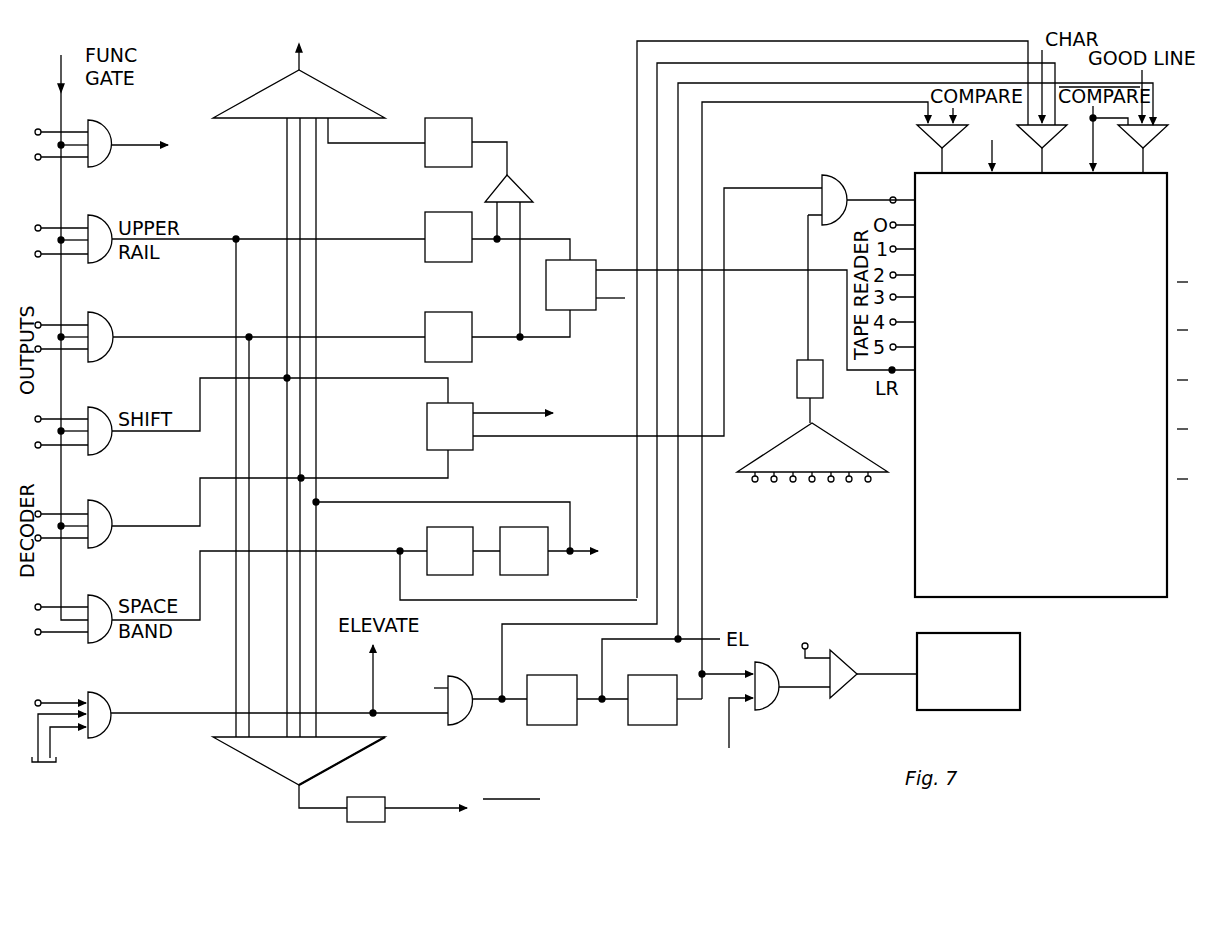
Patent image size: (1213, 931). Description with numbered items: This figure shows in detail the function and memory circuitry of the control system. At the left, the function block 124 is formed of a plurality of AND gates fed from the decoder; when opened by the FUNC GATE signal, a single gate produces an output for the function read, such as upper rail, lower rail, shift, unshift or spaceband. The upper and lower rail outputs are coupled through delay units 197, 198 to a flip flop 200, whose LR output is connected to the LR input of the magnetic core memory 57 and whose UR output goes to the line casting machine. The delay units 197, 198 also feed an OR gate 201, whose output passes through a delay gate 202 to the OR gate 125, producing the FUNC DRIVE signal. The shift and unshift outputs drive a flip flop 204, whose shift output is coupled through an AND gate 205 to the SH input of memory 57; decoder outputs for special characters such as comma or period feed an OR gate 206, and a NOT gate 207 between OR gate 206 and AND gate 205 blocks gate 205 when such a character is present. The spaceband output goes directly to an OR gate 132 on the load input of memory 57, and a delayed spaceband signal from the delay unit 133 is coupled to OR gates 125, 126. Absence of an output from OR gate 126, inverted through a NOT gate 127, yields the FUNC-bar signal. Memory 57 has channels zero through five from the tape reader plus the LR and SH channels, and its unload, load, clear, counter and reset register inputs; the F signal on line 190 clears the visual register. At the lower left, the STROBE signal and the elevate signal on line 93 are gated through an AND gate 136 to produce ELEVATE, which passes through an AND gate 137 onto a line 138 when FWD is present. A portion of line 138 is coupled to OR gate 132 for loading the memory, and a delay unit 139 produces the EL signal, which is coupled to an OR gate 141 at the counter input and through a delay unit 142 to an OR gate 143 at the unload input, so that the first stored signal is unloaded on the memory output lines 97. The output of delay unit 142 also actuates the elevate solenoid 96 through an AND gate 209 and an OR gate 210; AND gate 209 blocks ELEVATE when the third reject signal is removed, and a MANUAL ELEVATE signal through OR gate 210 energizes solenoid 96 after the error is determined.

The magnetic core memory 57 is at (1045, 346).
The elevate signal line 93 is at (43, 772).
The elevate solenoid 96 is at (1020, 688).
The memory output lines 97 is at (1169, 600).
The function block 124 is at (175, 389).
The OR gate 125 is at (262, 90).
The OR gate 126 is at (255, 760).
The NOT gate 127 is at (365, 797).
The OR gate 132 is at (1067, 135).
The delay unit 133 is at (510, 512).
The AND gate 136 is at (108, 737).
The AND gate 137 is at (455, 727).
The output line 138 is at (502, 702).
The delay unit 139 is at (555, 725).
The OR gate 141 is at (1168, 135).
The delay unit 142 is at (647, 725).
The OR gate 143 is at (917, 135).
The line 190 is at (992, 155).
The delay unit 197 is at (425, 228).
The delay unit 198 is at (425, 325).
The flip flop 200 is at (575, 258).
The OR gate 201 is at (533, 190).
The delay gate 202 is at (472, 128).
The flip flop 204 is at (427, 432).
The AND gate 205 is at (822, 178).
The OR gate 206 is at (790, 445).
The NOT gate 207 is at (797, 380).
The AND gate 209 is at (762, 712).
The OR gate 210 is at (845, 686).